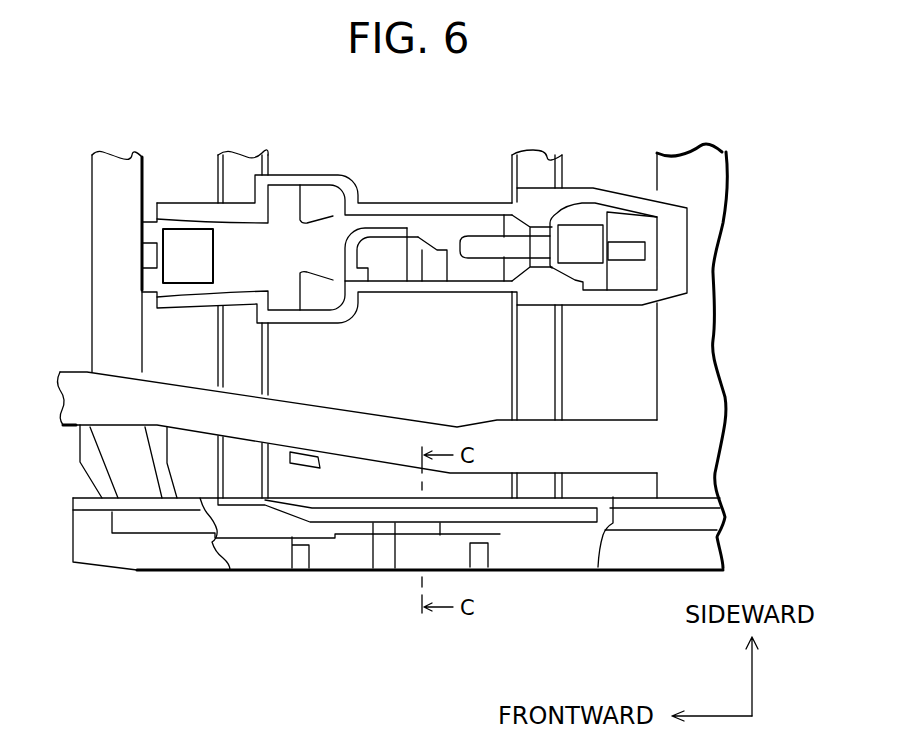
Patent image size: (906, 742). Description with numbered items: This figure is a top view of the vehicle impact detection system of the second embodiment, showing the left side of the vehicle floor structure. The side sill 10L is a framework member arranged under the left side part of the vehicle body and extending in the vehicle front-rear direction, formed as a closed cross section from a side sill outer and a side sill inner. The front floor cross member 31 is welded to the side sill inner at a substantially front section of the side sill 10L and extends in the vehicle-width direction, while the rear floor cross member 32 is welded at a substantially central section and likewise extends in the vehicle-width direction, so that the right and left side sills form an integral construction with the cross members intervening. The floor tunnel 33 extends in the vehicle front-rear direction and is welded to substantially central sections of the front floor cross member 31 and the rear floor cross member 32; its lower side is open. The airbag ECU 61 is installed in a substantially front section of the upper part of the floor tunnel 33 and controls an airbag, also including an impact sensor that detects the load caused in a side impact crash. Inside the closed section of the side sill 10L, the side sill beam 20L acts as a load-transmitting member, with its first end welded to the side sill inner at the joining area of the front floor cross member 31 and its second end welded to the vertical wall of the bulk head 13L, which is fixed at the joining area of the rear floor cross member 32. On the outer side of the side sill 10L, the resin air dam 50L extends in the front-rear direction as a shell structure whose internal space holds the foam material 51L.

The airbag ECU 61 is at (183, 255).
The floor tunnel 33 is at (667, 255).
The rear floor cross member 32 is at (540, 363).
The front floor cross member 31 is at (227, 465).
The side sill 10L is at (137, 503).
The air dam 50L is at (195, 548).
The foam material 51L is at (340, 552).
The side sill beam 20L is at (510, 513).
The bulk head 13L is at (540, 502).